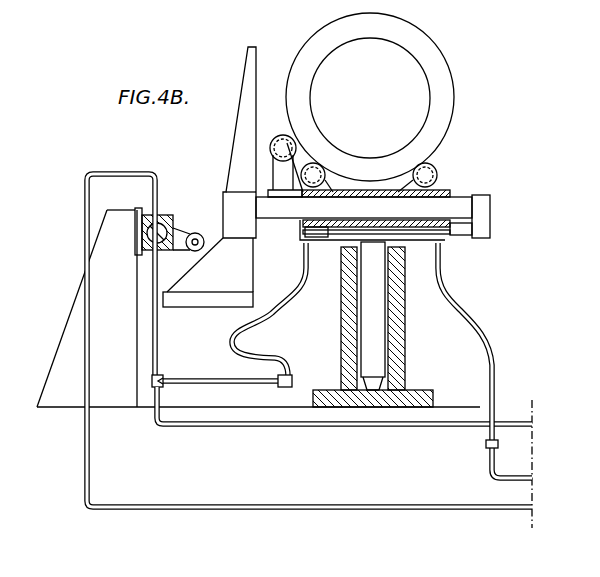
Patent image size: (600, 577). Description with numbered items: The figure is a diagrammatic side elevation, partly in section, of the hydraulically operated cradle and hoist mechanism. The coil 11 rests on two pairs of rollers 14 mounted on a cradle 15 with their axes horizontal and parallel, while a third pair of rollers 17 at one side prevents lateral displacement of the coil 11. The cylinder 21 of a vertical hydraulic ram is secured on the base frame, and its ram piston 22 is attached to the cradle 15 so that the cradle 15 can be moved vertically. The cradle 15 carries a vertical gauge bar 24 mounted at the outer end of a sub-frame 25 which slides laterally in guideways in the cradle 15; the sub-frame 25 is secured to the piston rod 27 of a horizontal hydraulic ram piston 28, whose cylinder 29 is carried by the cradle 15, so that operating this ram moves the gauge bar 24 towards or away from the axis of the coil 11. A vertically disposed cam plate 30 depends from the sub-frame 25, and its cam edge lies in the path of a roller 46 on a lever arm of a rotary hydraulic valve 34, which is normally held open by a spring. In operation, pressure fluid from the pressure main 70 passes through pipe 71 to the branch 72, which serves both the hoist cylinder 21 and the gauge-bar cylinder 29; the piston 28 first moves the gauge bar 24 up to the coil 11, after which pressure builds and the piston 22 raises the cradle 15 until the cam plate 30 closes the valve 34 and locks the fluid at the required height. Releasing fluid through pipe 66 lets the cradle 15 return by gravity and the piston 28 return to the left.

The coil 11 is at (440, 110).
The rollers 14 is at (310, 175).
The cradle 15 is at (430, 196).
The third pair of rollers 17 is at (288, 135).
The cylinder 21 is at (400, 347).
The ram piston 22 is at (370, 328).
The vertical gauge bar 24 is at (240, 138).
The sub-frame 25 is at (483, 212).
The piston rod 27 is at (455, 233).
The horizontal hydraulic ram piston 28 is at (305, 238).
The cylinder 29 is at (440, 238).
The plate 30 is at (203, 292).
The rotary hydraulic valve 34 is at (162, 218).
The roller 46 is at (194, 233).
The pipe 66 is at (290, 424).
The pressure main 70 is at (489, 462).
The pipe 71 is at (400, 507).
The branch 72 is at (202, 380).